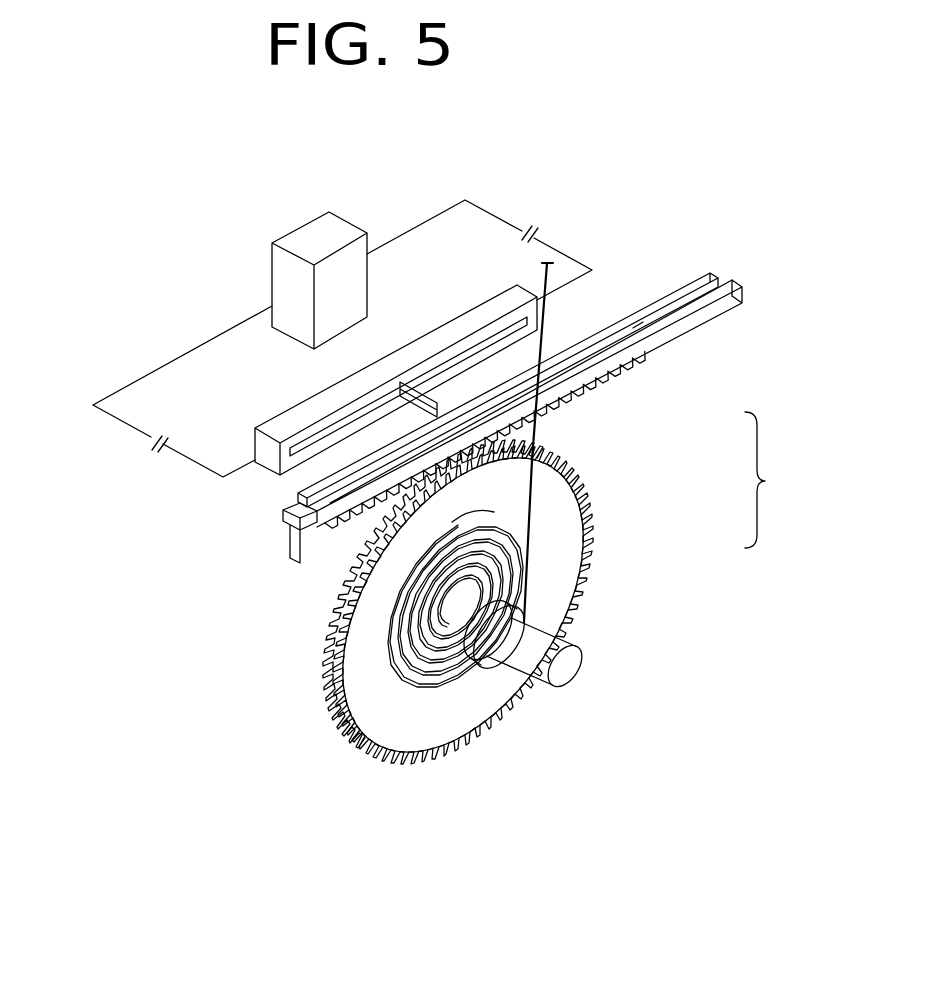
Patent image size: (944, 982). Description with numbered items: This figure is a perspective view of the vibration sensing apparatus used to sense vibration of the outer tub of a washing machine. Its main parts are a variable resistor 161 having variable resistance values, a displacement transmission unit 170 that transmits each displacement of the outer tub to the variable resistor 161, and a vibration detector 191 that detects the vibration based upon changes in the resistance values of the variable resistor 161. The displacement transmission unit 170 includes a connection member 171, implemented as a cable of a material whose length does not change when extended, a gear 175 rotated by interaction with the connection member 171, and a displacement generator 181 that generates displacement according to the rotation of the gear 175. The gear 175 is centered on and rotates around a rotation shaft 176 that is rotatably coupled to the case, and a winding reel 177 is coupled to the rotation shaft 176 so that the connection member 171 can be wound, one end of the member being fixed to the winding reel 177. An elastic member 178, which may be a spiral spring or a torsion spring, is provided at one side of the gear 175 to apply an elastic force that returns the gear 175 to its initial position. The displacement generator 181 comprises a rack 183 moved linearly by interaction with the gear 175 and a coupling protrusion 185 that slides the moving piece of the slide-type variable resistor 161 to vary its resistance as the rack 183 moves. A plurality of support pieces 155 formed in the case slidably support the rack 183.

The support pieces 155 is at (718, 312).
The variable resistor 161 is at (468, 318).
The displacement transmission unit 170 is at (776, 480).
The connection member 171 is at (541, 438).
The gear 175 is at (588, 531).
The rotation shaft 176 is at (573, 668).
The winding reel 177 is at (500, 664).
The elastic member 178 is at (410, 683).
The displacement generator 181 is at (606, 399).
The rack 183 is at (284, 527).
The coupling protrusion 185 is at (293, 489).
The vibration detector 191 is at (272, 256).